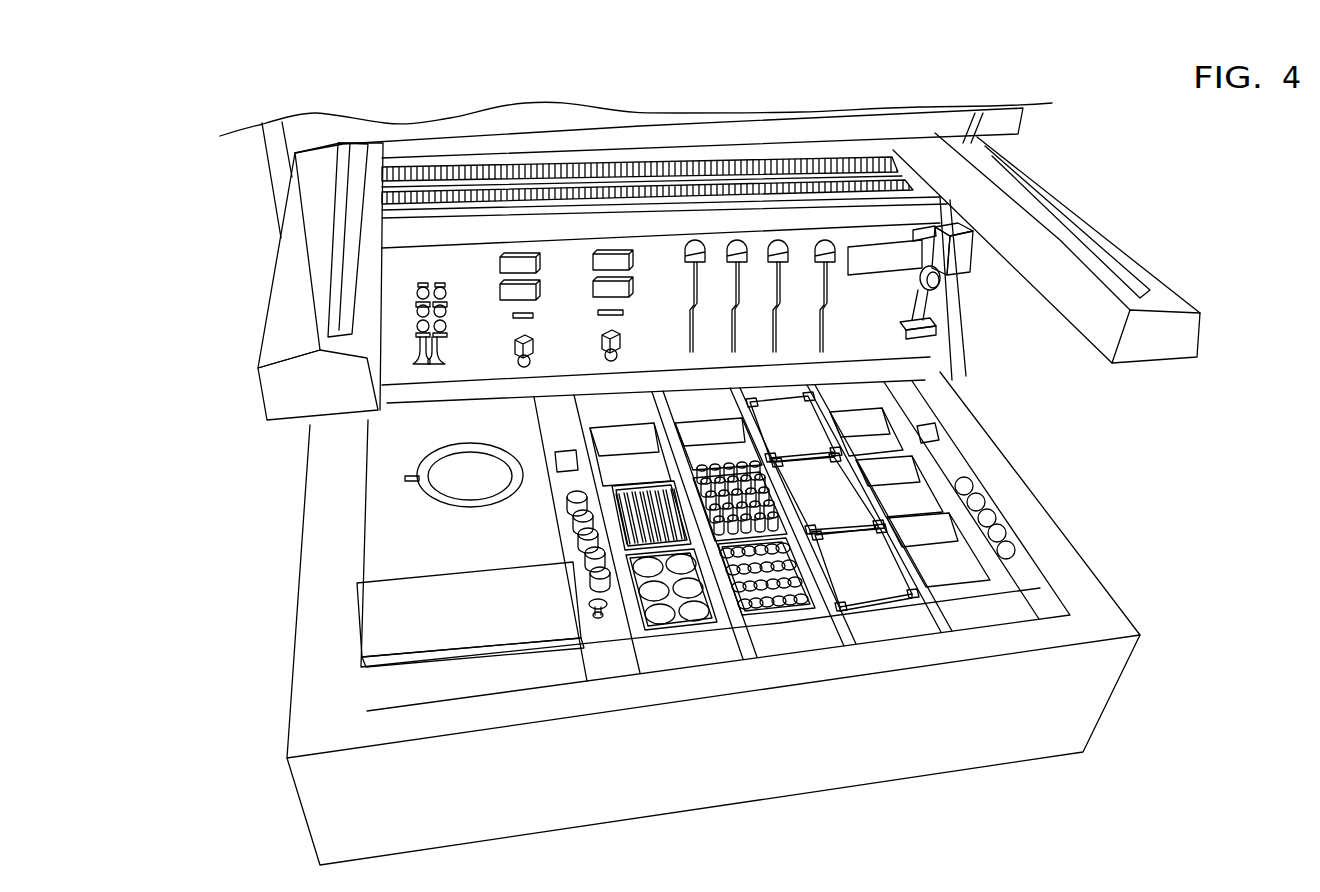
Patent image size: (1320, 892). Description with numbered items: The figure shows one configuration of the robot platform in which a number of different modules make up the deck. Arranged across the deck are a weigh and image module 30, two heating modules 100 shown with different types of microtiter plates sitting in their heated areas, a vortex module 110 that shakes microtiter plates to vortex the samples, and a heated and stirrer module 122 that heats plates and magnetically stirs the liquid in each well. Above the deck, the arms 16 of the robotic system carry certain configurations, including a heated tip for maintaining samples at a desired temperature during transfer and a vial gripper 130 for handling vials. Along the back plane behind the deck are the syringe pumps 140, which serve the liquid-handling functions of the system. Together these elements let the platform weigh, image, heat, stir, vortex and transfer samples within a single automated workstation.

The arms 16 is at (292, 284).
The weigh and image module 30 is at (392, 514).
The heating modules 100 is at (725, 600).
The vortex module 110 is at (831, 511).
The heated and stirrer module 122 is at (898, 504).
The vial gripper 130 is at (929, 348).
The syringe pumps 140 is at (694, 240).